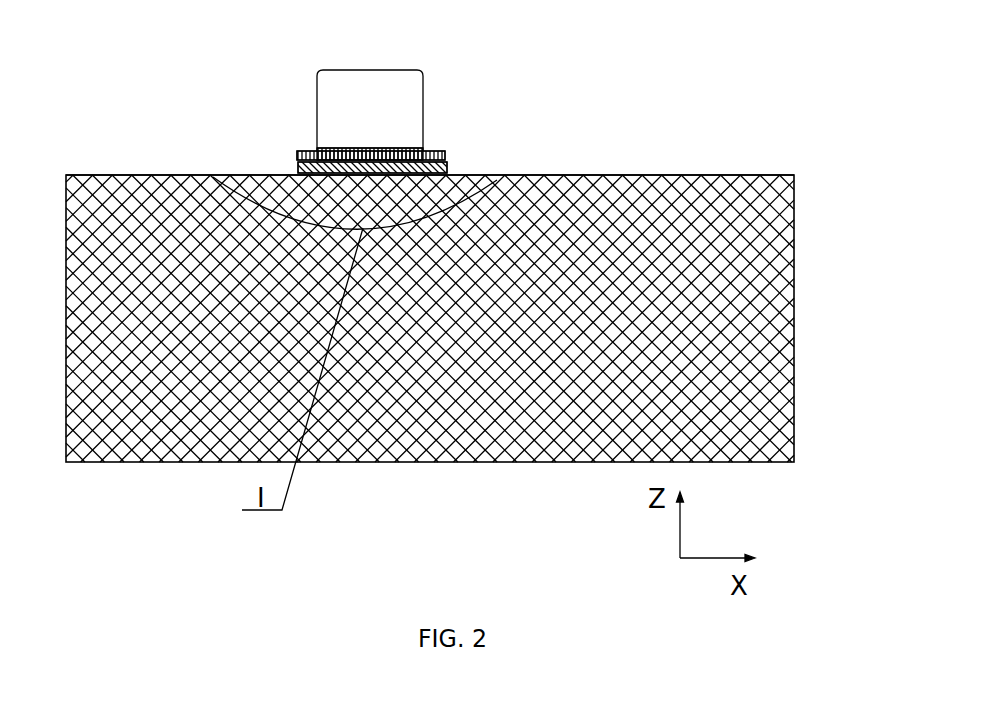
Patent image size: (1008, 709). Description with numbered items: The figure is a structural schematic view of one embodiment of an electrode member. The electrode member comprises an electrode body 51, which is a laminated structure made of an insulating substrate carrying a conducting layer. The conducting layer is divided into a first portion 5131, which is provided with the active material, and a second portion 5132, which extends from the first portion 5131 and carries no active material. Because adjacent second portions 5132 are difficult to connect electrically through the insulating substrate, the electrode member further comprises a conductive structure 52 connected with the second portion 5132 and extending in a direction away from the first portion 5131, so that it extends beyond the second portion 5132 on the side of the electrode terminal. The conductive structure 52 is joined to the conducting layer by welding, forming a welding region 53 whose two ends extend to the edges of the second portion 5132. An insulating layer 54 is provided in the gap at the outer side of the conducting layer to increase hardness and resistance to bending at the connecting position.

The electrode body 51 is at (750, 160).
The first portion 5131 is at (583, 167).
The second portion 5132 is at (452, 150).
The welding region 53 is at (308, 145).
The conductive structure 52 is at (347, 93).
The insulating layer 54 is at (297, 165).